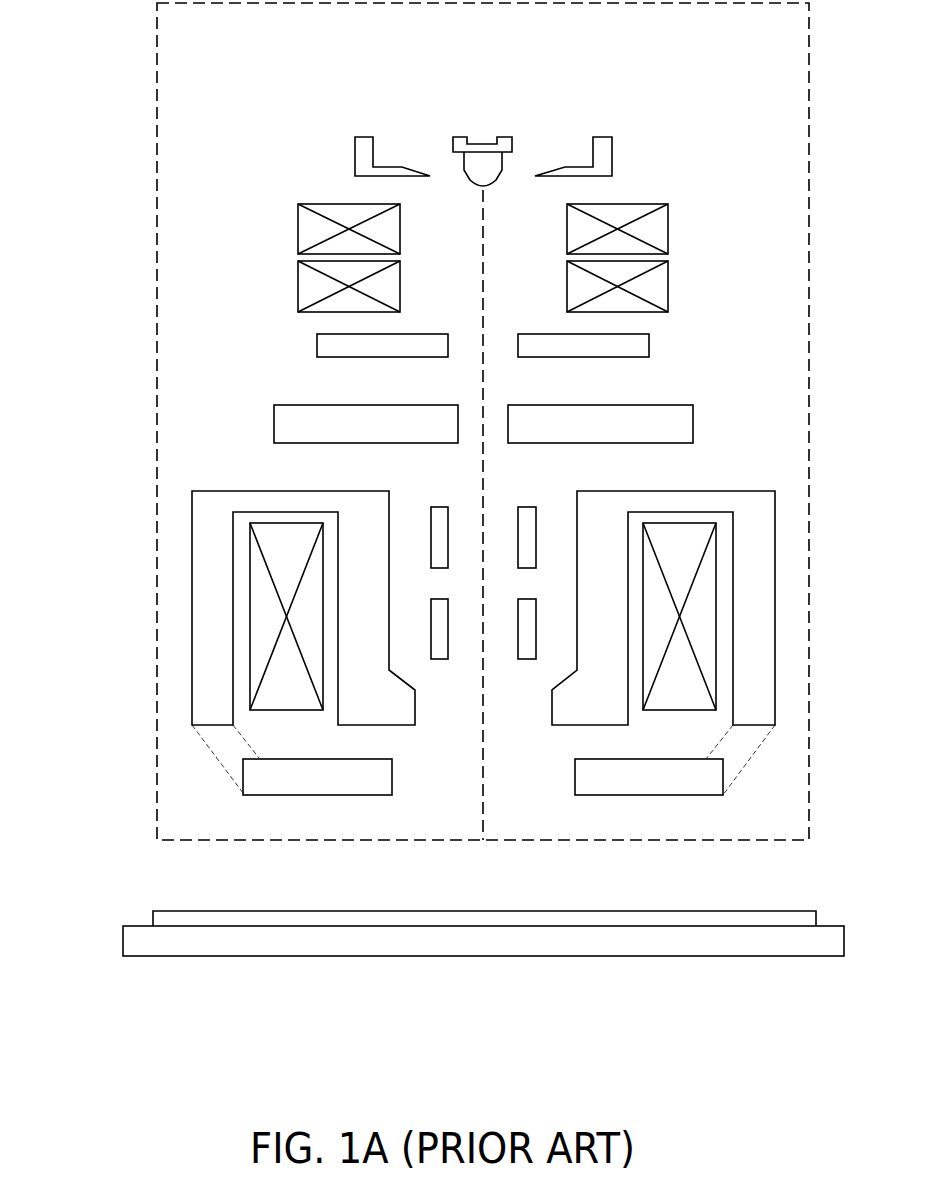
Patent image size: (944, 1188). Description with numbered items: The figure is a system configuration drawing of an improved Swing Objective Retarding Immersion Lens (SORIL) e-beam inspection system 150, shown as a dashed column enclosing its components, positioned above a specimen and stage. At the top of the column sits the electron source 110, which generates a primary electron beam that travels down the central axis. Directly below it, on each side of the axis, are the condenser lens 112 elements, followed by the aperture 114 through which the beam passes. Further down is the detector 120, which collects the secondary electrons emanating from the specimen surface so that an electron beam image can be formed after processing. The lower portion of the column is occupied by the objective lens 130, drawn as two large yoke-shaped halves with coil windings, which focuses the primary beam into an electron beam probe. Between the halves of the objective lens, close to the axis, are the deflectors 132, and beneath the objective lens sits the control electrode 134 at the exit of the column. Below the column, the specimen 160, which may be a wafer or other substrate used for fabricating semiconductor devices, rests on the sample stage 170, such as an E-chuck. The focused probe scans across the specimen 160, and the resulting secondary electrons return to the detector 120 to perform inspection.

The electron source 110 is at (480, 148).
The condenser lens 112 is at (298, 226).
The aperture 114 is at (317, 340).
The detector 120 is at (274, 420).
The objective lens 130 is at (742, 490).
The deflectors 132 is at (436, 507).
The control electrode 134 is at (280, 796).
The e-beam inspection system 150 is at (229, 61).
The specimen 160 is at (153, 919).
The sample stage 170 is at (124, 942).